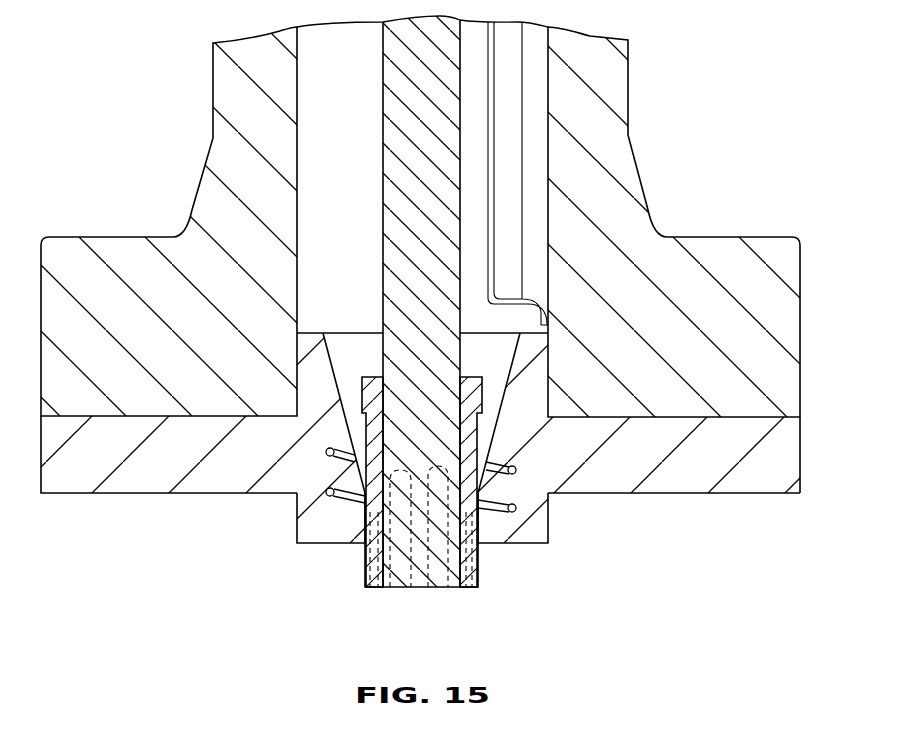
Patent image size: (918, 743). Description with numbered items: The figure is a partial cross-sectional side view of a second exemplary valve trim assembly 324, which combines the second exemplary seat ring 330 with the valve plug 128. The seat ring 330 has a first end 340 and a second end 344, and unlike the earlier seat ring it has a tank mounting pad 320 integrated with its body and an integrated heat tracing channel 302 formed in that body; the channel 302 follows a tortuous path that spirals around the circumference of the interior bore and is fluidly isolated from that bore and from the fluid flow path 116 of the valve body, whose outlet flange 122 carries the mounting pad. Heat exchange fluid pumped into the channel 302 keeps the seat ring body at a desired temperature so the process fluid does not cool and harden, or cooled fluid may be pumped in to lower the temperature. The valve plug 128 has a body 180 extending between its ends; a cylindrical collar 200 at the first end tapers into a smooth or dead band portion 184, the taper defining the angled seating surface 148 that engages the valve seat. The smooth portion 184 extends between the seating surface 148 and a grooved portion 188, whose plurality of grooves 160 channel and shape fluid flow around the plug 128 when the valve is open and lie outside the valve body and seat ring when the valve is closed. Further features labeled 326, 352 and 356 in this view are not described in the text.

The fluid flow path 116 is at (316, 128).
The outlet flange 122 is at (798, 263).
The valve plug 128 is at (348, 468).
The seating surface 148 is at (478, 433).
The plurality of grooves 160 is at (395, 590).
The body 180 is at (440, 413).
The smooth portion 184 is at (605, 443).
The grooved portion 188 is at (370, 553).
The cylindrical collar 200 is at (462, 392).
The heat tracing channel 302 is at (327, 449).
The tank mounting pad 320 is at (785, 455).
The valve trim assembly 324 is at (748, 126).
The shaft 326 is at (442, 100).
The seat ring 330 is at (548, 497).
The first end 340 is at (537, 387).
The second end 344 is at (538, 518).
The tapered surface 352 is at (335, 372).
The passages 356 is at (452, 525).